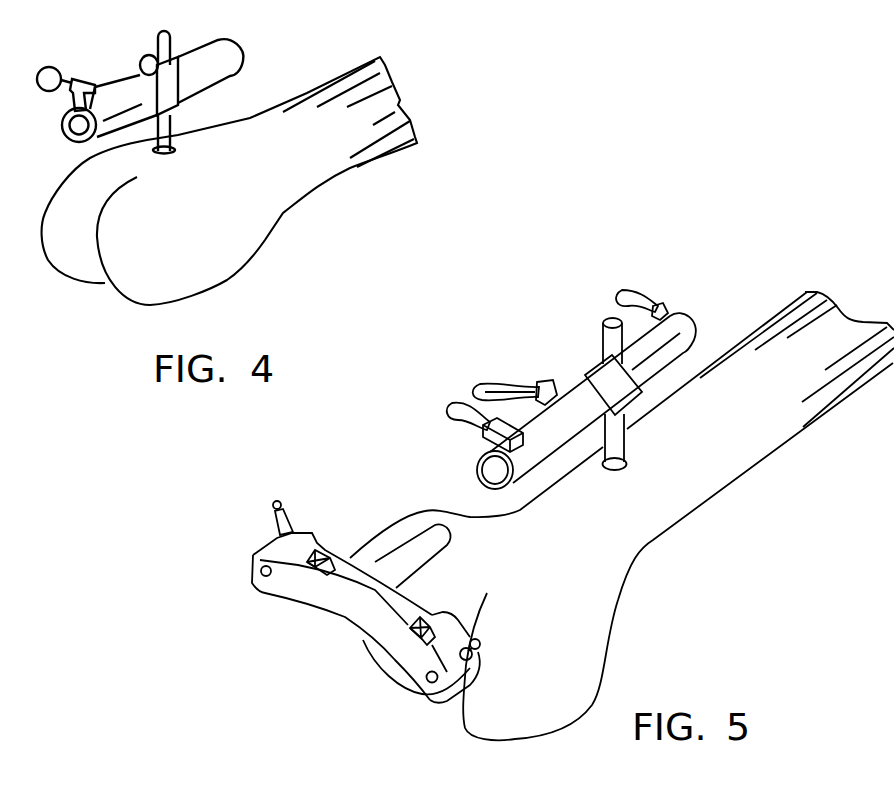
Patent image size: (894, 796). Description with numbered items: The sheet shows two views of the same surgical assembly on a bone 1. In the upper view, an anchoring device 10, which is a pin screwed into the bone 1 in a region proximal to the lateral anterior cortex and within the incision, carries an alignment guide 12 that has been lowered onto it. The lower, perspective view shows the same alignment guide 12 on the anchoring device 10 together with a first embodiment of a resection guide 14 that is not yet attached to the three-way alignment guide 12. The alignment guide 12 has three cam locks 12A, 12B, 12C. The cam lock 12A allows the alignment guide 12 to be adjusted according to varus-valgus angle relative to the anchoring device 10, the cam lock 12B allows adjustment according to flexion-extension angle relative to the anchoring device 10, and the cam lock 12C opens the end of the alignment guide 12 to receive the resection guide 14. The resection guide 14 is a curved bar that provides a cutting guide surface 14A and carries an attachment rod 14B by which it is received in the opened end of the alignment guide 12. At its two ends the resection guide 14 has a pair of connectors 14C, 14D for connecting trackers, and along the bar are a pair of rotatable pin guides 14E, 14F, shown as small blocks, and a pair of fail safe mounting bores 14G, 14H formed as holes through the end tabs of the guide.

In FIG. 4, the bone 1 is at (229, 266).
In FIG. 5, the bone 1 is at (557, 715).
In FIG. 4, the anchoring device 10 is at (158, 42).
In FIG. 5, the anchoring device 10 is at (603, 342).
In FIG. 4, the alignment guide 12 is at (243, 60).
In FIG. 5, the alignment guide 12 is at (690, 338).
In FIG. 5, the cam lock 12A is at (643, 294).
In FIG. 5, the cam lock 12B is at (498, 382).
In FIG. 5, the cam lock 12C is at (455, 404).
In FIG. 5, the resection guide 14 is at (334, 597).
In FIG. 5, the cutting guide surface 14A is at (342, 605).
In FIG. 5, the attachment rod 14B is at (397, 553).
In FIG. 5, the connector 14C is at (276, 501).
In FIG. 5, the connector 14D is at (468, 662).
In FIG. 5, the rotatable pin guide 14E is at (394, 655).
In FIG. 5, the rotatable pin guide 14F is at (305, 568).
In FIG. 5, the fail safe mounting bore 14G is at (258, 568).
In FIG. 5, the fail safe mounting bore 14H is at (430, 684).